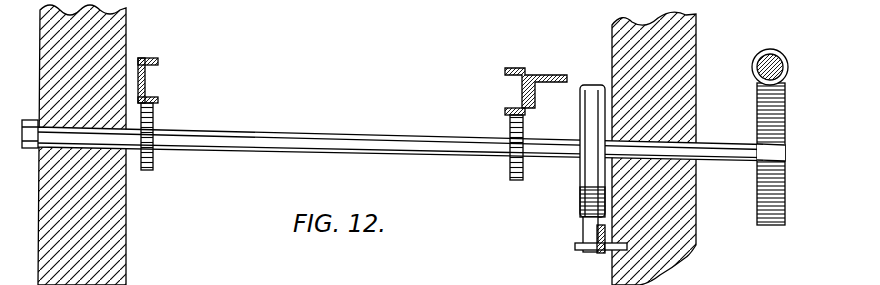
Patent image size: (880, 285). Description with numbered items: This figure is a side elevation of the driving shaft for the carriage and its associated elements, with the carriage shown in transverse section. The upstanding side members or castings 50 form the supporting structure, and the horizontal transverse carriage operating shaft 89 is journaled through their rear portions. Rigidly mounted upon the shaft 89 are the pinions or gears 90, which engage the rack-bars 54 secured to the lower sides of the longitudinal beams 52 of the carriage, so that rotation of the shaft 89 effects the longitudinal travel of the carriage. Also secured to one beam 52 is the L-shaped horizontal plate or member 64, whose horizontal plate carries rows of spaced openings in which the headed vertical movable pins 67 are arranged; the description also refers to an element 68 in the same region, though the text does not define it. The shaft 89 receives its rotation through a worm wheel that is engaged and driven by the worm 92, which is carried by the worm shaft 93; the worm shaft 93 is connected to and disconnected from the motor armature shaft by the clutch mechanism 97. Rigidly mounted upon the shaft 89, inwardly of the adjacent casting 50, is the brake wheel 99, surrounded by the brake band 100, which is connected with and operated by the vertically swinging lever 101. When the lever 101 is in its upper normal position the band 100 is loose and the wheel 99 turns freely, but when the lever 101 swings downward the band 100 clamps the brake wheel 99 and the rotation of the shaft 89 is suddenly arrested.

The side members or castings 50 is at (110, 207).
The longitudinal beams 52 is at (147, 72).
The rack-bars 54 is at (165, 98).
The horizontal plate or member 64 is at (535, 78).
The carriage operating shaft 89 is at (440, 146).
The pinions or gears 90 is at (155, 108).
The worm 92 is at (776, 50).
The worm shaft 93 is at (757, 69).
The clutch mechanism 97 is at (767, 228).
The brake wheel 99 is at (582, 172).
The brake band 100 is at (582, 224).
The vertically swinging lever 101 is at (600, 257).
The headed vertical movable pins 67 is at (272, 279).
The element 68 is at (322, 279).